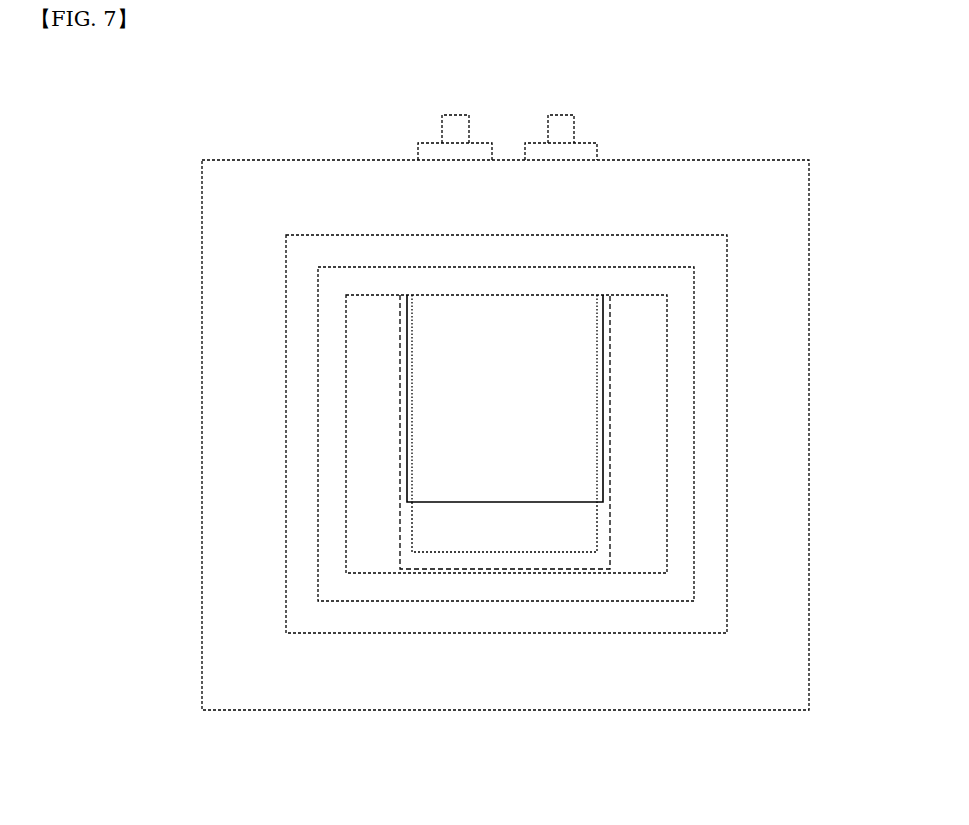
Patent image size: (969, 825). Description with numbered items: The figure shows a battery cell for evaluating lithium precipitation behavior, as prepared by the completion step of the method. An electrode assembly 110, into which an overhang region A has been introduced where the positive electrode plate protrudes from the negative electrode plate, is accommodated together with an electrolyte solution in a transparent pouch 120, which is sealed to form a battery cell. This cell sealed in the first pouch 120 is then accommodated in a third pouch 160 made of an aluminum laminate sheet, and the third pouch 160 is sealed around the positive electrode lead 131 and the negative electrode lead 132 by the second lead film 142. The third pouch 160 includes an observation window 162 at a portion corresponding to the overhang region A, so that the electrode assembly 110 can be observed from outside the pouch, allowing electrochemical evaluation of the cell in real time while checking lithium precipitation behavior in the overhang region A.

The electrode assembly 110 is at (438, 370).
The transparent pouch 120 is at (640, 417).
The positive electrode lead 131 is at (705, 298).
The negative electrode lead 132 is at (442, 128).
The second lead film 142 is at (418, 150).
The pouch of aluminum laminate sheet 160 is at (738, 668).
The observation window 162 is at (678, 493).
The overhang region A is at (500, 527).